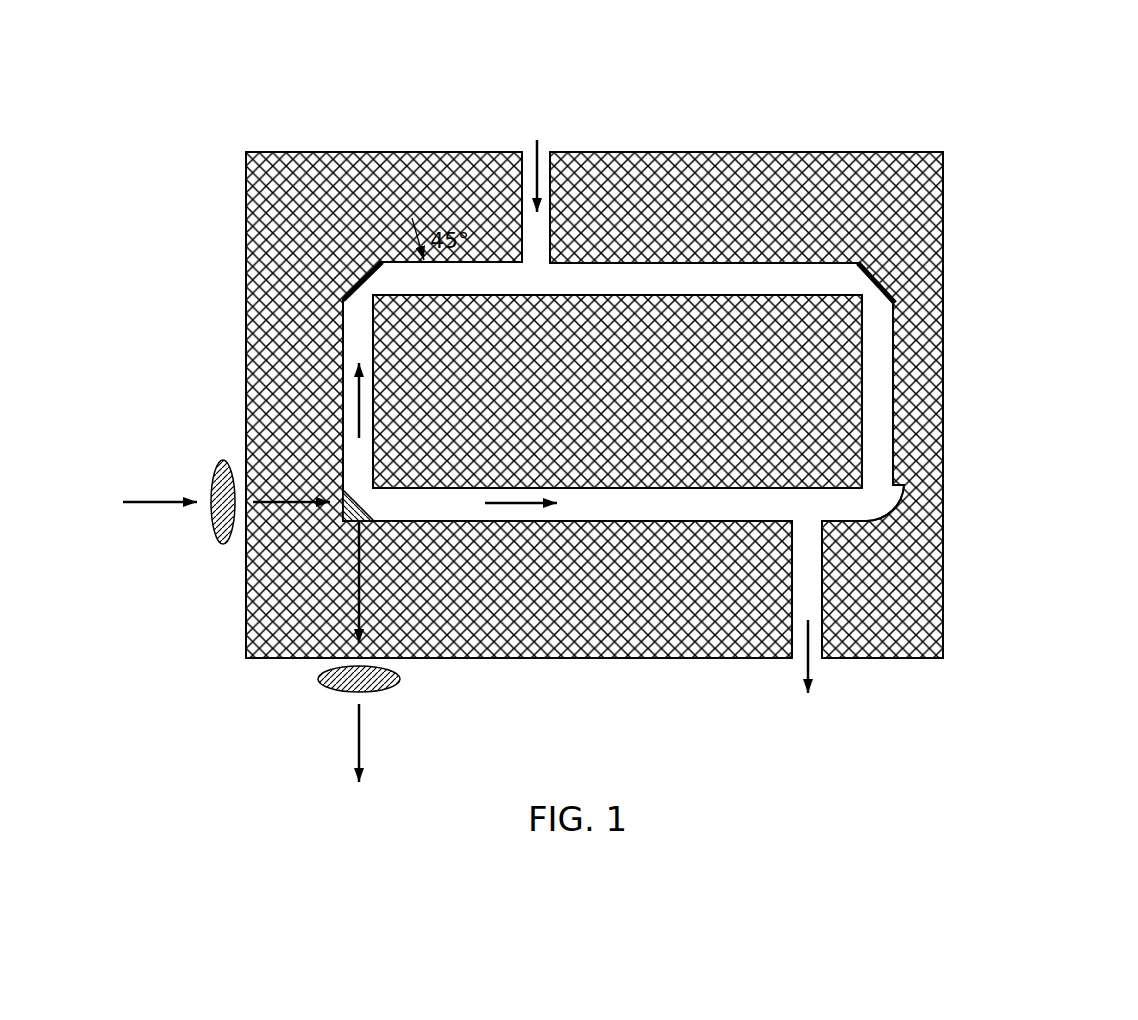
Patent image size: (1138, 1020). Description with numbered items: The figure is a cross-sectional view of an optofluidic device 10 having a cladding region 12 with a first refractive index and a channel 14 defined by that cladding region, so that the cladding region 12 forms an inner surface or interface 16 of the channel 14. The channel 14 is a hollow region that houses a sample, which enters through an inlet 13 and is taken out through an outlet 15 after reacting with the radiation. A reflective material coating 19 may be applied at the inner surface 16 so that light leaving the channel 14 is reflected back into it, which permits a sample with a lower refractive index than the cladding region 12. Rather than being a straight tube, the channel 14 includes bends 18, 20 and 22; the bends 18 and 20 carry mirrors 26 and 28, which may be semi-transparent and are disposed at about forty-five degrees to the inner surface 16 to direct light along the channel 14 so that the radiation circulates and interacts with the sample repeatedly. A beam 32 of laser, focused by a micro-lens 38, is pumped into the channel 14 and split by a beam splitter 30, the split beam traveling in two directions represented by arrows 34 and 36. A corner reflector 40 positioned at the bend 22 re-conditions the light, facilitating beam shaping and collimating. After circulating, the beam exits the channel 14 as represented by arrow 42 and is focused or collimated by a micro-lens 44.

The optofluidic device 10 is at (1027, 78).
The cladding region 12 is at (725, 163).
The inlet 13 is at (535, 147).
The channel 14 is at (549, 291).
The outlet 15 is at (813, 688).
The inner surface 16 is at (667, 295).
The bend 18 is at (345, 268).
The reflective material coating 19 is at (640, 260).
The bend 20 is at (883, 268).
The bend 22 is at (918, 528).
The mirror 26 is at (378, 266).
The mirror 28 is at (860, 266).
The beam splitter 30 is at (364, 505).
The beam 32 is at (155, 500).
The arrow 34 is at (345, 398).
The arrow 36 is at (513, 507).
The micro-lens 38 is at (223, 545).
The corner reflector 40 is at (887, 530).
The arrow 42 is at (357, 742).
The micro-lens 44 is at (318, 680).